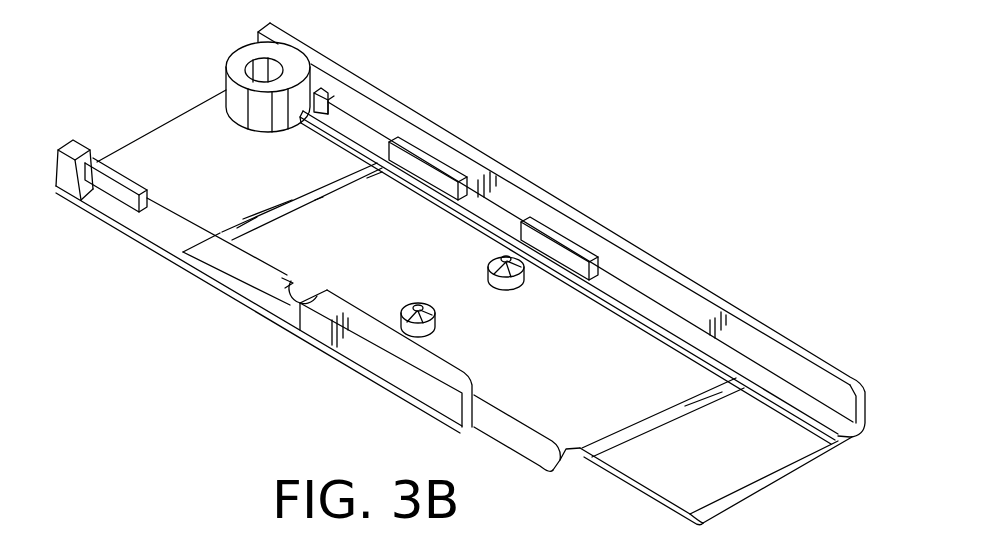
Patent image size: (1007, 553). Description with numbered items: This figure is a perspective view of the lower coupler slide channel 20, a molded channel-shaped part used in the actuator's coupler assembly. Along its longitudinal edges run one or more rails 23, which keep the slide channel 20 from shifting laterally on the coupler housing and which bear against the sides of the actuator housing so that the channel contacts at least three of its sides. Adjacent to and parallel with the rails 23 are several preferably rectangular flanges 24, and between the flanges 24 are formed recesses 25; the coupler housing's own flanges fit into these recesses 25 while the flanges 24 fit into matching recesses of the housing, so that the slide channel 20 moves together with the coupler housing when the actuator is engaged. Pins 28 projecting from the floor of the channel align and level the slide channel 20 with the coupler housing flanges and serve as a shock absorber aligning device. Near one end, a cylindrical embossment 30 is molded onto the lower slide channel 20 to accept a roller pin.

The lower coupler slide channel 20 is at (138, 101).
The rails 23 is at (362, 85).
The flanges 24 is at (122, 190).
The recesses 25 is at (174, 230).
The pins 28 is at (405, 310).
The embossment 30 is at (250, 62).